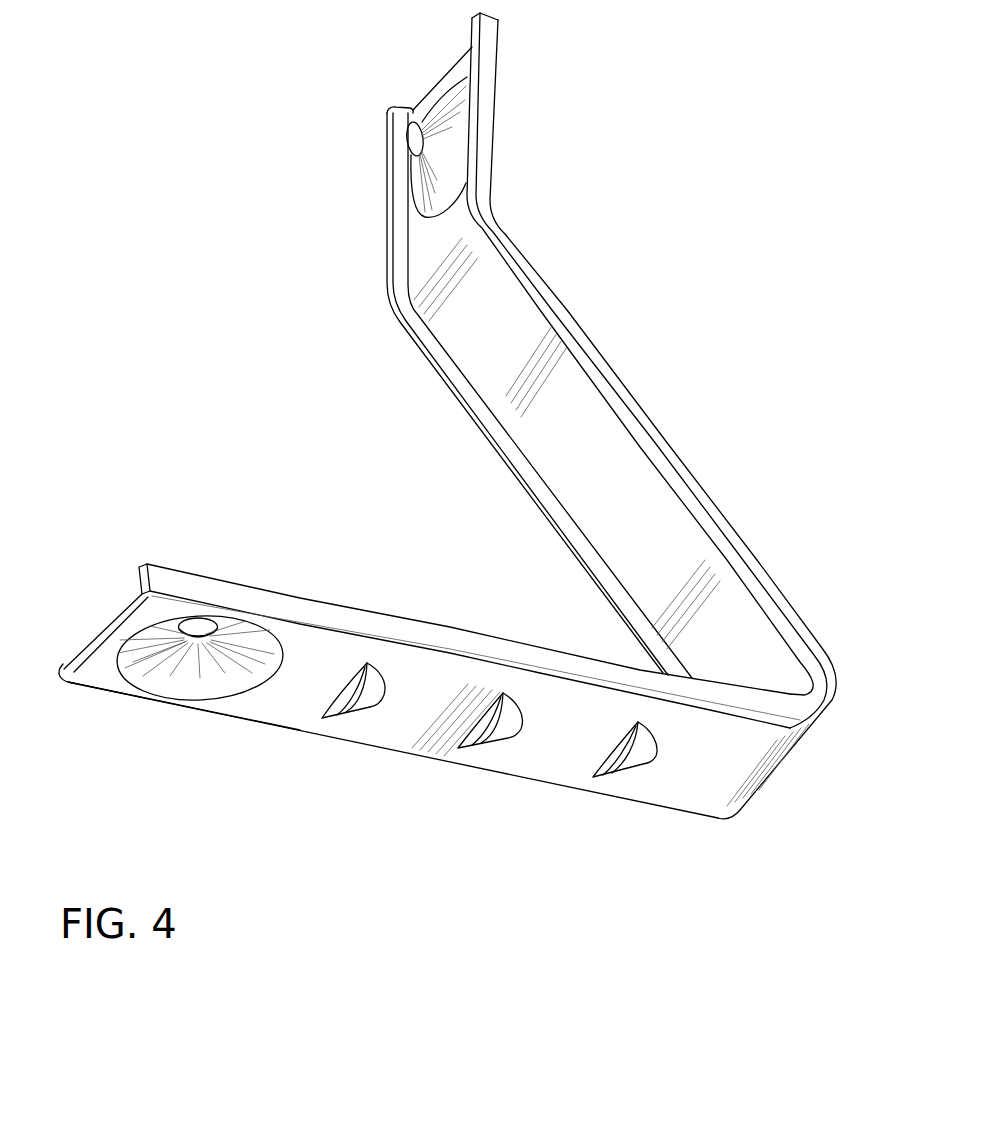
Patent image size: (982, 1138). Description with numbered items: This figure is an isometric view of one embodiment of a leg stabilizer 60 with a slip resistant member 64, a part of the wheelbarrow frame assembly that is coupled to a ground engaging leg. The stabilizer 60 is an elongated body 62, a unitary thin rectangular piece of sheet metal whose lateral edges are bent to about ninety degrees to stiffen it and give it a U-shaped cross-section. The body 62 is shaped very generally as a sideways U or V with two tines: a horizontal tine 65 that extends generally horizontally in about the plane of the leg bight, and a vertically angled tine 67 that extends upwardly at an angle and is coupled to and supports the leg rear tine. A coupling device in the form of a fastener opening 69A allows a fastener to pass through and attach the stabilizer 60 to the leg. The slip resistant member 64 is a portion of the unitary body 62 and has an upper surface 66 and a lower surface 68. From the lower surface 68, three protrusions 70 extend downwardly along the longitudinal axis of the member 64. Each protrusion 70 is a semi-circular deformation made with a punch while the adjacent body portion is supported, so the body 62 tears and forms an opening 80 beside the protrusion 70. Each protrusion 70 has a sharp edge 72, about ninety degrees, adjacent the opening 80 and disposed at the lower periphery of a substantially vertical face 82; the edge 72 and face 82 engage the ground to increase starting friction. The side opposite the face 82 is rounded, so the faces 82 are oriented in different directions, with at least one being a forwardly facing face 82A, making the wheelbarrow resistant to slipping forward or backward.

The leg stabilizer 60 is at (298, 284).
The elongated body 62 is at (673, 458).
The slip resistant member 64 is at (410, 701).
The horizontal tine 65 is at (307, 650).
The upper surface 66 is at (101, 632).
The vertically angled tine 67 is at (558, 384).
The lower surface 68 is at (272, 702).
The fastener opening 69A is at (408, 151).
The protrusion 70 is at (645, 764).
The edge 72 is at (612, 752).
The opening 80 is at (350, 693).
The face 82 is at (485, 712).
The forwardly facing face 82A is at (362, 708).